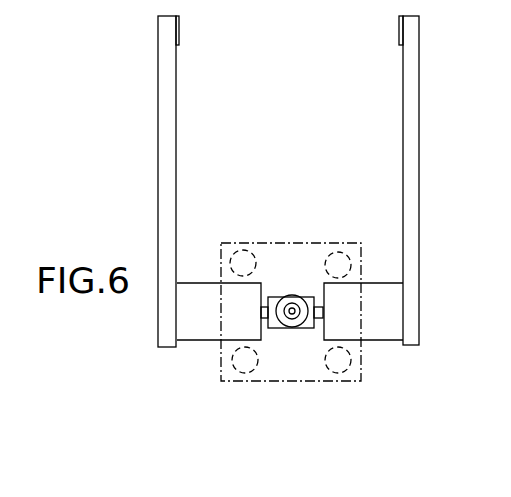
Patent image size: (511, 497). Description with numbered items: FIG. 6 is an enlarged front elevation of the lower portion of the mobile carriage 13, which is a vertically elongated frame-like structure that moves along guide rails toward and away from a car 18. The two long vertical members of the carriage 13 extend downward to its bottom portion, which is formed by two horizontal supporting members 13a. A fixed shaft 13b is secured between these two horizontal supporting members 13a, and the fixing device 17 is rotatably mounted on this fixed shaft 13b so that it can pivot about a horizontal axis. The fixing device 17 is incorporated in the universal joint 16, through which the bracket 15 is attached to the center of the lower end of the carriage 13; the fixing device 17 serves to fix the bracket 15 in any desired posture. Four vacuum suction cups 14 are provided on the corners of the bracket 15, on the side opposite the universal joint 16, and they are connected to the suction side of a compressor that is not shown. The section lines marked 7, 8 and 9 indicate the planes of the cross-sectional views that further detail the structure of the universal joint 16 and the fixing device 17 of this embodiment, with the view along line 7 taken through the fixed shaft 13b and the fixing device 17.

The section line 7- 7 is at (137, 122).
The section line 8- 8 is at (322, 412).
The section line 9- 9 is at (207, 312).
The mobile carriage 13 is at (420, 213).
The horizontal supporting member 13a is at (393, 300).
The fixed shaft 13b is at (319, 319).
The vacuum suction cup 14 is at (242, 251).
The bracket 15 is at (352, 382).
The universal joint 16 is at (292, 309).
The fixing device 17 is at (277, 328).
The car 18 is at (318, 0).